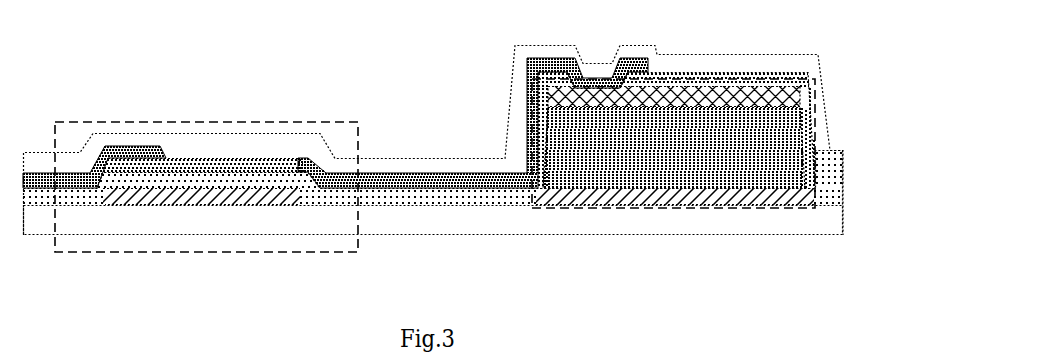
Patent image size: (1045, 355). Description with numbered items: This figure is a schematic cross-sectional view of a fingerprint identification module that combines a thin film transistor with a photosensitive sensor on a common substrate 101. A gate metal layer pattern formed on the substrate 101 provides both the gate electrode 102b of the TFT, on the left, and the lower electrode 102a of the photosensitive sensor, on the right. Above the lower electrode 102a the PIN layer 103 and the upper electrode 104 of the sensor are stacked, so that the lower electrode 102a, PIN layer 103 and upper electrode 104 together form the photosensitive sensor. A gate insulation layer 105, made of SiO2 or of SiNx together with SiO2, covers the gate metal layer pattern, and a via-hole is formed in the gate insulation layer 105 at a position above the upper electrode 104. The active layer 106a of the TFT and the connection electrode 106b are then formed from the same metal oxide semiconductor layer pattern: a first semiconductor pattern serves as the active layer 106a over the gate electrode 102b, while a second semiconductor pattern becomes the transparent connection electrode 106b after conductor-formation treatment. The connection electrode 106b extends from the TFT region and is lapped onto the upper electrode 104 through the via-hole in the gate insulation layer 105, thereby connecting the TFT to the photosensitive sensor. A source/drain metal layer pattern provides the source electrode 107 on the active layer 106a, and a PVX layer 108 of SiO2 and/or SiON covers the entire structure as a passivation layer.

The substrate 101 is at (827, 223).
The lower electrode 102a is at (808, 196).
The gate electrode 102b is at (267, 192).
The PIN layer 103 is at (783, 153).
The upper electrode 104 is at (783, 104).
The gate insulation layer 105 is at (397, 193).
The active layer 106a is at (263, 163).
The connection electrode 106b is at (388, 182).
The source electrode 107 is at (127, 152).
The PVX layer 108 is at (221, 148).